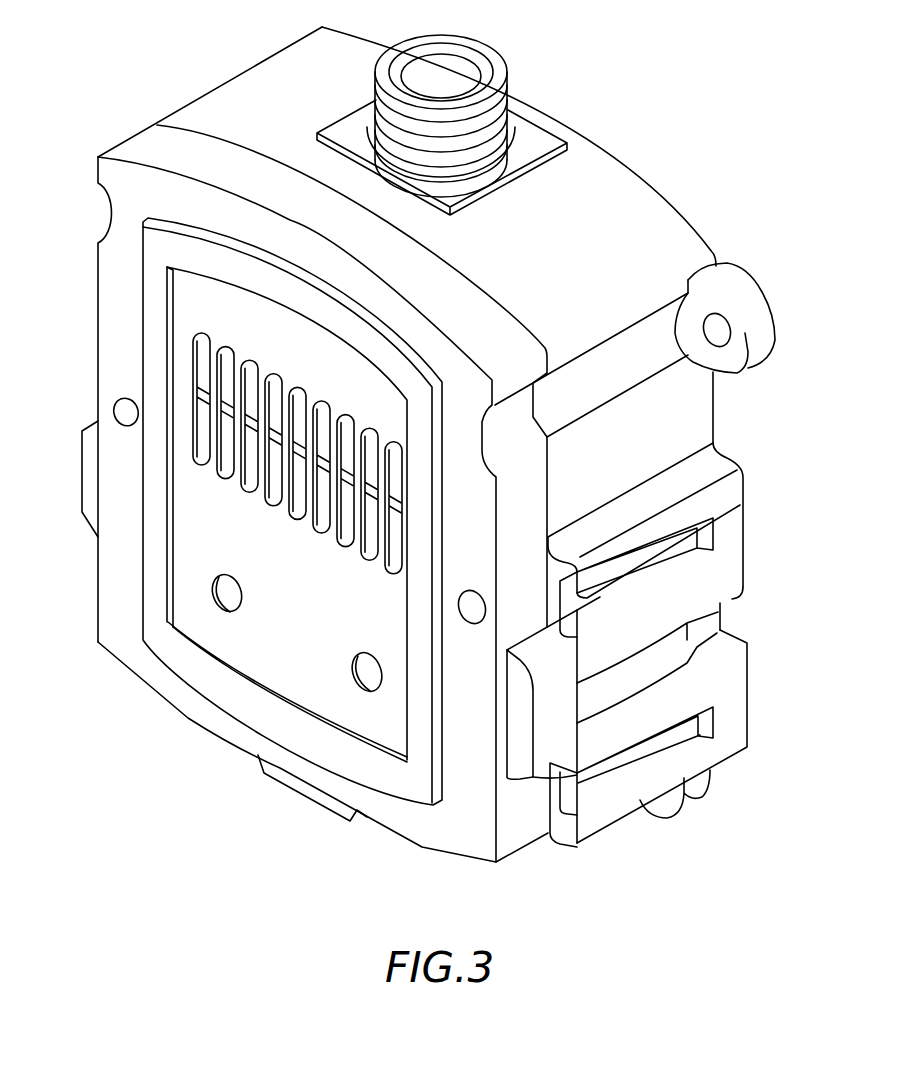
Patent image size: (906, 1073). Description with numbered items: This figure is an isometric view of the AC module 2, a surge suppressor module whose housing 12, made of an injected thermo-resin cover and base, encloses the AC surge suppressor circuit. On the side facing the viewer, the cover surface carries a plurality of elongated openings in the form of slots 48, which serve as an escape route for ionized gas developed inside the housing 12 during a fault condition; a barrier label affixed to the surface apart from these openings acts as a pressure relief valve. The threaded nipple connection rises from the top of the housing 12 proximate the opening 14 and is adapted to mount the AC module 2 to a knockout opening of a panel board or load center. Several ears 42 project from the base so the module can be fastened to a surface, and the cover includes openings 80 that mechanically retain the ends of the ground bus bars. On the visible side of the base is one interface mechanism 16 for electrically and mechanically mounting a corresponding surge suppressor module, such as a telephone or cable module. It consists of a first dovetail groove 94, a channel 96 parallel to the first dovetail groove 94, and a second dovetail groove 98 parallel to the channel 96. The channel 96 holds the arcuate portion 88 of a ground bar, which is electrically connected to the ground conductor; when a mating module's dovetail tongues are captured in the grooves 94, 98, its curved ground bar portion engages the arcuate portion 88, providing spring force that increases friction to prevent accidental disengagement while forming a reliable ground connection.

The AC module 2 is at (117, 103).
The housing 12 is at (613, 195).
The opening 14 is at (457, 78).
The interface mechanism 16 is at (668, 657).
The ears 42 is at (733, 285).
The slots 48 is at (340, 542).
The openings 80 is at (86, 512).
The arcuate portion 88 is at (658, 673).
The first dovetail groove 94 is at (666, 553).
The channel 96 is at (740, 597).
The second dovetail groove 98 is at (615, 773).